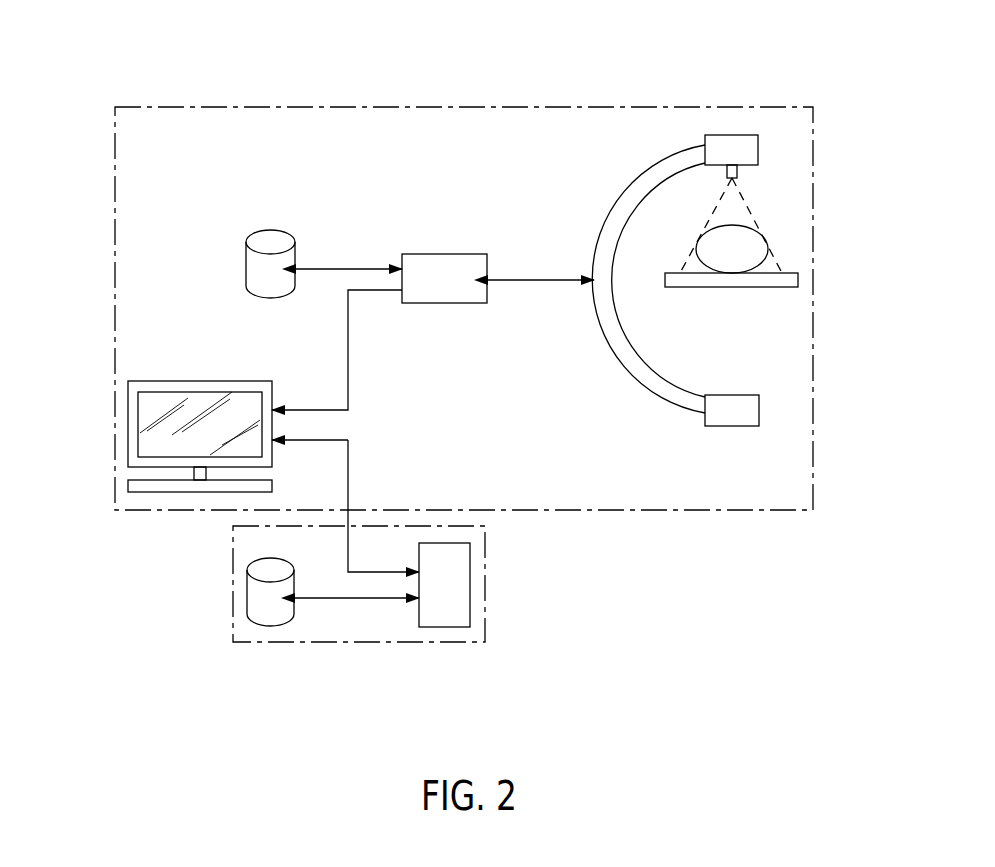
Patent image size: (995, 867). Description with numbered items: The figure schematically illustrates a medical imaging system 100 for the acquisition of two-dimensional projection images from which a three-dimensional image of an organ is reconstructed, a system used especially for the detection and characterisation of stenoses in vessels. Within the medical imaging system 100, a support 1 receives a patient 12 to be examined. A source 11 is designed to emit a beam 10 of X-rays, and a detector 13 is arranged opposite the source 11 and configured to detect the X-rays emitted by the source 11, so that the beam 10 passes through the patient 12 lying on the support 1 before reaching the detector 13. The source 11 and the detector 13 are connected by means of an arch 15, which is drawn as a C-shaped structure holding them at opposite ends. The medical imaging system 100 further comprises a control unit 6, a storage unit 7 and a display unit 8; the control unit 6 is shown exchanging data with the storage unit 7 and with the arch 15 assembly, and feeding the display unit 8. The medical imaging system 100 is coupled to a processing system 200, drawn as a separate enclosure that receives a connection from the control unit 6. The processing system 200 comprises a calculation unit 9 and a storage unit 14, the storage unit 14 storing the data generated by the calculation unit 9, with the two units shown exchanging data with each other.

The medical imaging system 100 is at (364, 107).
The processing system 200 is at (297, 642).
The support 1 is at (777, 288).
The control unit 6 is at (452, 290).
The storage unit 7 is at (278, 283).
The display unit 8 is at (131, 428).
The calculation unit 9 is at (452, 596).
The beam of X-rays 10 is at (750, 205).
The source 11 is at (735, 135).
The patient 12 is at (758, 253).
The detector 13 is at (759, 412).
The storage unit 14 is at (283, 611).
The arch 15 is at (652, 167).